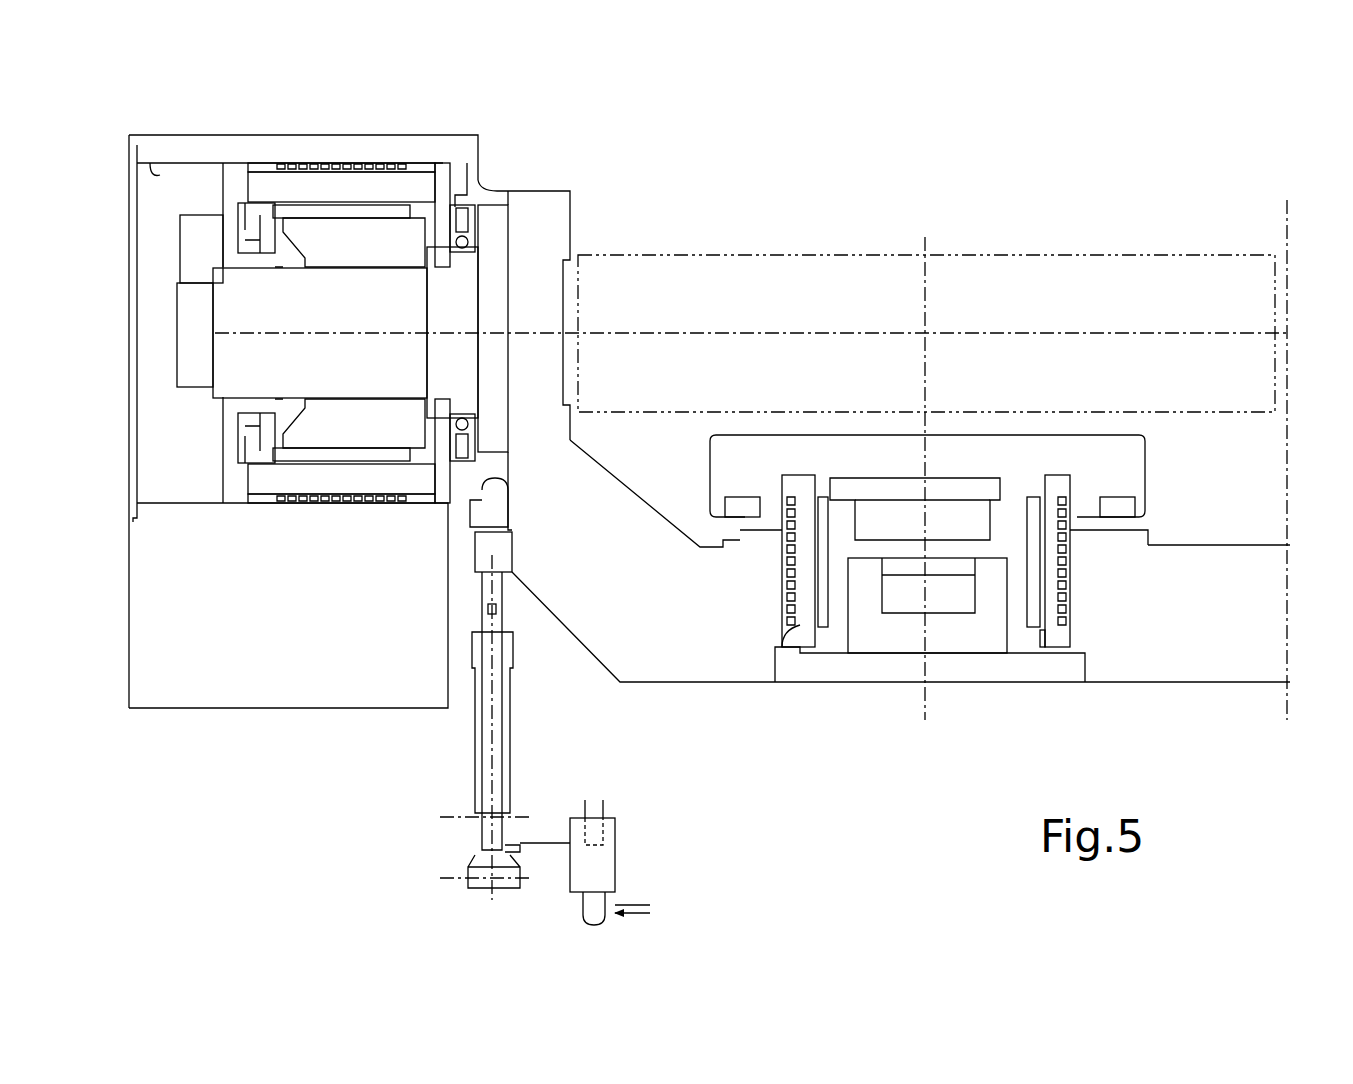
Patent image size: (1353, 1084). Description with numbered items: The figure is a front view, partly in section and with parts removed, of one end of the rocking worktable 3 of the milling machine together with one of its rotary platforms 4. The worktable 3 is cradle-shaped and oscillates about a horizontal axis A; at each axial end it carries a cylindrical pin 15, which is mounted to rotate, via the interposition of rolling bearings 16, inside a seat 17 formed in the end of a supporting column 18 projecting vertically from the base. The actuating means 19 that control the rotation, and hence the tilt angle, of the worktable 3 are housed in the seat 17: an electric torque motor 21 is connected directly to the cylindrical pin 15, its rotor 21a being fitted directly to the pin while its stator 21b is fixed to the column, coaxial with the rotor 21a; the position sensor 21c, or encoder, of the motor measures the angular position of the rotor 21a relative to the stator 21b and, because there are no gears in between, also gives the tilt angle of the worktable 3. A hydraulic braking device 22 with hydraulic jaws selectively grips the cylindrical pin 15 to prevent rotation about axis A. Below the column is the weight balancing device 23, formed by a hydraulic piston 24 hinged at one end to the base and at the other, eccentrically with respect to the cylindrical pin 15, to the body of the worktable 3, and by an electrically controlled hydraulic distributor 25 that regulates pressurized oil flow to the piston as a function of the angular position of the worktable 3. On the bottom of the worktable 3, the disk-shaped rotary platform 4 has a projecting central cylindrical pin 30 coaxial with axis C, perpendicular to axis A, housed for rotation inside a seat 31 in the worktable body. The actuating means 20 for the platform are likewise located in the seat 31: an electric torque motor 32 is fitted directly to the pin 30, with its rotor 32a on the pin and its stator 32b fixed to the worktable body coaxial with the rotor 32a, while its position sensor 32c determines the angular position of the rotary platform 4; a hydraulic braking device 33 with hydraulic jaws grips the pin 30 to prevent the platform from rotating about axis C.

The rocking worktable 3 is at (1183, 660).
The rotary platform 4 is at (1157, 475).
The cylindrical pin 15 is at (303, 352).
The rolling bearings 16 is at (462, 207).
The seat 17 is at (152, 165).
The supporting column 18 is at (178, 693).
The actuating means for operating the worktable 19 is at (160, 278).
The actuating means for operating the rotary platforms 20 is at (948, 662).
The electric torque motor 21 is at (236, 484).
The rotor 21a is at (328, 210).
The stator 21b is at (265, 186).
The position sensor 21c is at (205, 232).
The hydraulic braking device 22 is at (247, 427).
The weight balancing device 23 is at (430, 842).
The hydraulic piston 24 is at (500, 743).
The electrically controlled hydraulic distributor 25 is at (605, 866).
The central cylindrical pin 30 is at (905, 527).
The seat 31 is at (792, 616).
The electric torque motor 32 is at (1027, 648).
The rotor 32a is at (822, 622).
The stator 32b is at (1053, 578).
The position sensor 32c is at (903, 600).
The hydraulic braking device 33 is at (986, 530).
The axis of rotation of the rotary platform C is at (928, 246).
The horizontal axis of rotation A is at (1133, 334).